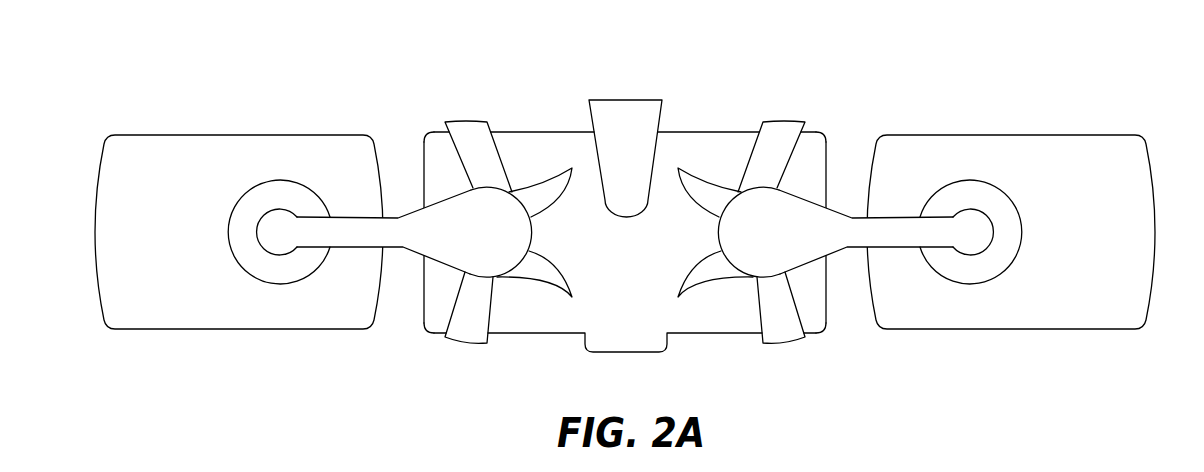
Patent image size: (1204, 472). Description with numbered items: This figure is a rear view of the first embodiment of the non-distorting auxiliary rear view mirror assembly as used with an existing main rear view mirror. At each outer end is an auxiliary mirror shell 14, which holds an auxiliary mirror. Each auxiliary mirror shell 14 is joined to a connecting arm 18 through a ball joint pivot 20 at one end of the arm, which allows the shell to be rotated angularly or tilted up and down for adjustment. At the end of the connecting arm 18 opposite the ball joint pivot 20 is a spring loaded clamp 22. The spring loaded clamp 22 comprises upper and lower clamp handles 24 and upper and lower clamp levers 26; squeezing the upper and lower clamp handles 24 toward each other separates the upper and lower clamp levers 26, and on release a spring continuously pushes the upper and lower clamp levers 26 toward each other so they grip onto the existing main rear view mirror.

The auxiliary mirror shell 14 is at (1047, 170).
The connecting arm 18 is at (840, 227).
The ball joint pivot 20 is at (282, 272).
The spring loaded clamp 22 is at (745, 258).
The upper and lower clamp handles 24 is at (698, 187).
The upper and lower clamp levers 26 is at (468, 330).